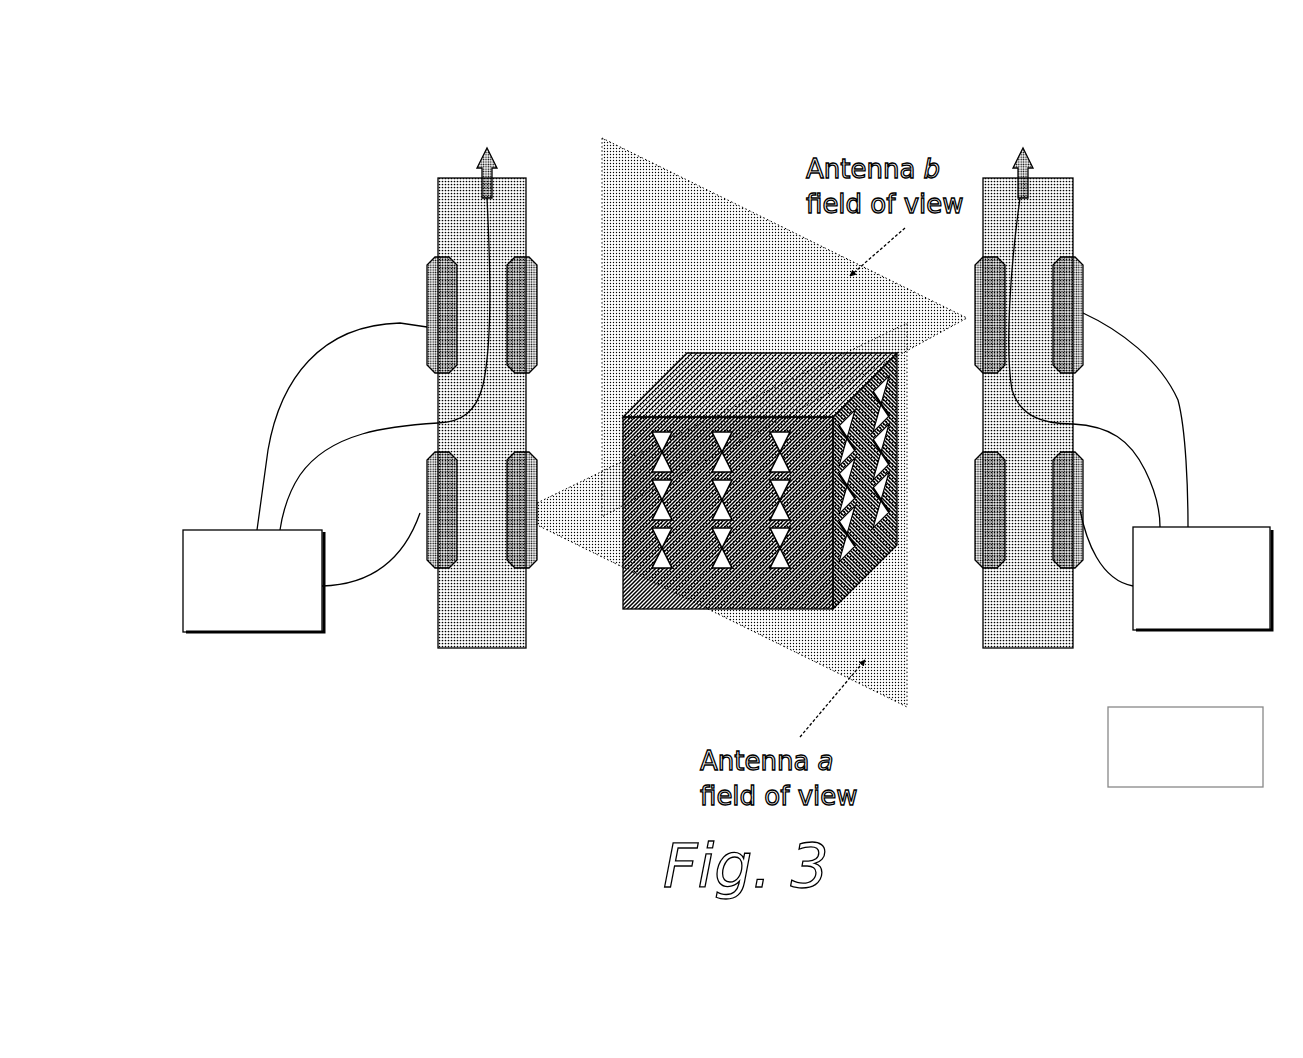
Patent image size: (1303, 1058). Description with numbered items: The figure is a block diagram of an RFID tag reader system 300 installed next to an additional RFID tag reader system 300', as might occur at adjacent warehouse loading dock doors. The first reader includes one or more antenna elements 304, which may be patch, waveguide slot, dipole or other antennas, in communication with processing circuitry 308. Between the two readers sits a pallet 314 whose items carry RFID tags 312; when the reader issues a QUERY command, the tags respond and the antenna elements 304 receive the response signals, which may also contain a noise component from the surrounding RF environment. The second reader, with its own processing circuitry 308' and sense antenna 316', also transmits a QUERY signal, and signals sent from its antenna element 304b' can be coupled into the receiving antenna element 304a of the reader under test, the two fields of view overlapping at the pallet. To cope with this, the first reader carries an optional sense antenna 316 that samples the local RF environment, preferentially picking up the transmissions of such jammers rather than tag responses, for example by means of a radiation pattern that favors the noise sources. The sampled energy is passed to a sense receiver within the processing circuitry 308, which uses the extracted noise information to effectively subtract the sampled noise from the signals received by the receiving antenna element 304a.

The RFID tag reader system 300 is at (344, 413).
The antenna elements 304 is at (444, 512).
The receiving antenna element 304a is at (515, 510).
The processing circuitry 308 is at (305, 477).
The RFID tags 312 is at (776, 570).
The pallet 314 is at (830, 335).
The sense antenna 316 is at (366, 309).
The additional RFID tag reader system 300' is at (1134, 413).
The antenna element of the second tag reader system 304b' is at (1018, 412).
The processing circuitry of the second tag reader system 308' is at (1176, 471).
The sense antenna of the second tag reader system 316' is at (1084, 307).